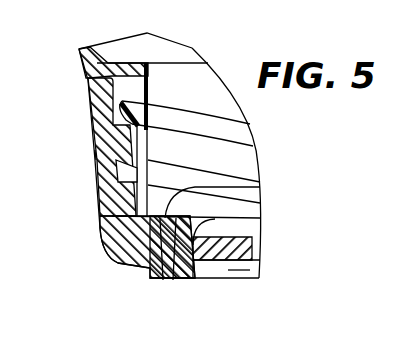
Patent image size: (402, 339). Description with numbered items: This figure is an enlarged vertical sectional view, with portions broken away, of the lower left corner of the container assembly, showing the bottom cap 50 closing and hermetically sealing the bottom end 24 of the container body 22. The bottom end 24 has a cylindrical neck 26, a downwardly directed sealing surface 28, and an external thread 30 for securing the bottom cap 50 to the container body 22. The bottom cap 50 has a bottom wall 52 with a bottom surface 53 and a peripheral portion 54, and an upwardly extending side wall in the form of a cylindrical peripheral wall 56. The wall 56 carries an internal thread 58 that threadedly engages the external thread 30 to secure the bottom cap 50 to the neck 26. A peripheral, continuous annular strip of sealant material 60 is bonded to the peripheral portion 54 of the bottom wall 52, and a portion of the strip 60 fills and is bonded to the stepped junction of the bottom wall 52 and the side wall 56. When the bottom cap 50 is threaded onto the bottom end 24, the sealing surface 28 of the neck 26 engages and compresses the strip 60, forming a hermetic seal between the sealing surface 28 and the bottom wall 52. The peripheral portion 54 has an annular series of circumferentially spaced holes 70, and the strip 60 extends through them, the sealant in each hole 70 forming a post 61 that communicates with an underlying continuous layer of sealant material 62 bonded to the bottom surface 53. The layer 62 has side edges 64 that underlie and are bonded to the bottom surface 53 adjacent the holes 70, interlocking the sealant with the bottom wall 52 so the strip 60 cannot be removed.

The container body 22 is at (110, 52).
The bottom end 24 is at (188, 63).
The cylindrical neck 26 is at (142, 102).
The sealing surface 28 is at (230, 188).
The external thread 30 is at (148, 153).
The bottom cap 50 is at (83, 120).
The bottom wall 52 is at (250, 243).
The bottom surface 53 is at (228, 263).
The peripheral portion 54 is at (138, 263).
The cylindrical peripheral wall 56 is at (100, 148).
The internal thread 58 is at (115, 192).
The strip of sealant material 60 is at (113, 220).
The post 61 is at (174, 280).
The underlying layer of sealant material 62 is at (152, 282).
The side edges 64 is at (190, 277).
The holes 70 is at (164, 280).